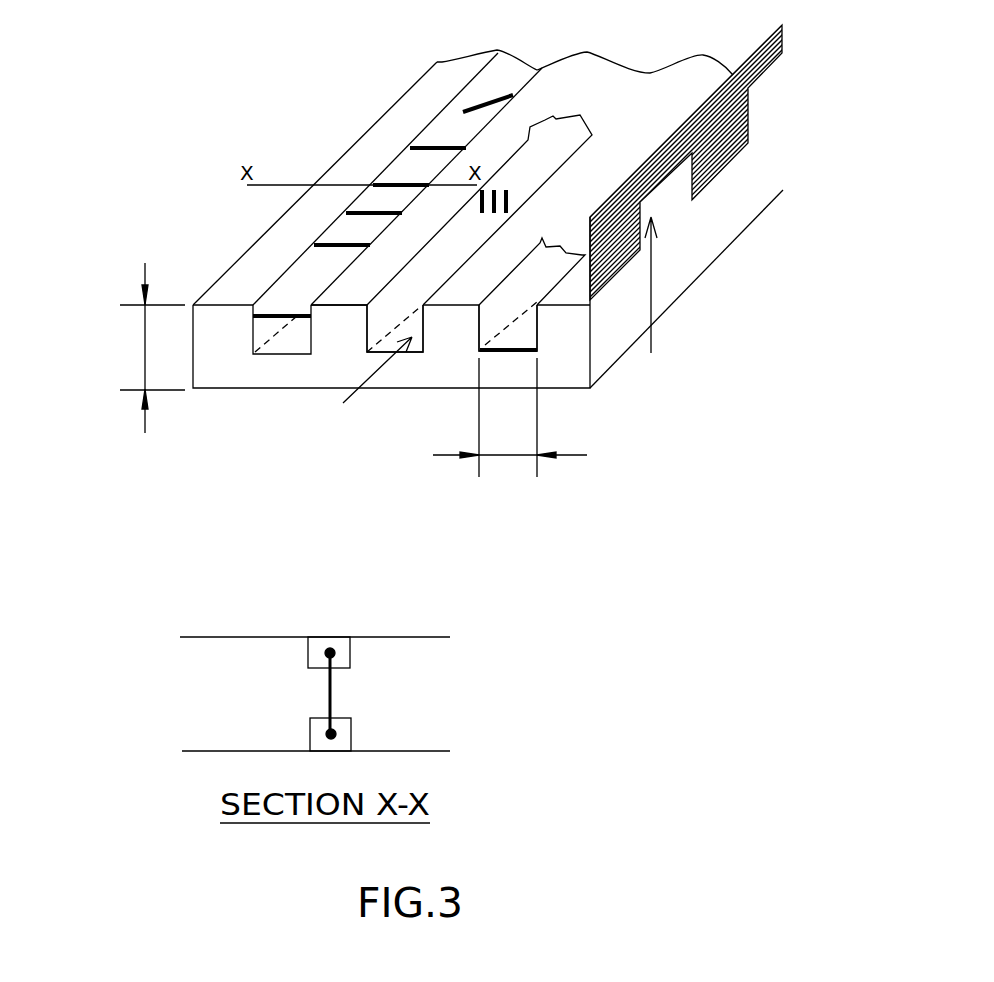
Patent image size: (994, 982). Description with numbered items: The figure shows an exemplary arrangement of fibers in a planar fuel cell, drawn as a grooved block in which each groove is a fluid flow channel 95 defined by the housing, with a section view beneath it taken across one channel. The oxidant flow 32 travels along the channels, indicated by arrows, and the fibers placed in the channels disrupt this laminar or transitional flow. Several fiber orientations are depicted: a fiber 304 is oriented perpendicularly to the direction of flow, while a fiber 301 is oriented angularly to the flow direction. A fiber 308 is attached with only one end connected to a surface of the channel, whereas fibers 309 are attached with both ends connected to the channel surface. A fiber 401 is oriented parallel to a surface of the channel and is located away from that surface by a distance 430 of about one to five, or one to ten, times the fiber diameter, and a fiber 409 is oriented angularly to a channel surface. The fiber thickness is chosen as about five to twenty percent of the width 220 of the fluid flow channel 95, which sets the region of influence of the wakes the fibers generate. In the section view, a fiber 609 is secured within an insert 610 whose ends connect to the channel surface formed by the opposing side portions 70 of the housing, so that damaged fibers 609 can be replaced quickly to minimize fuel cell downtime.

The fiber oriented angularly to the direction of fluid flow 301 is at (463, 112).
The fiber oriented perpendicularly to the direction of flow 304 is at (500, 188).
The fiber attached with one end connected to a channel surface 308 is at (383, 263).
The fiber attached with both ends connected to a channel surface 309 is at (417, 147).
The oxidant flow 32 is at (500, 326).
The fiber oriented parallel to a channel surface 401 is at (282, 315).
The fiber oriented angularly to a channel surface 409 is at (500, 353).
The distance 430 is at (145, 348).
The width of the fluid flow channel 220 is at (510, 455).
The fluid flow channel 95 is at (520, 337).
The fiber secured within an insert 609 is at (383, 263).
The insert 610 is at (338, 637).
The side portions 70 is at (435, 637).